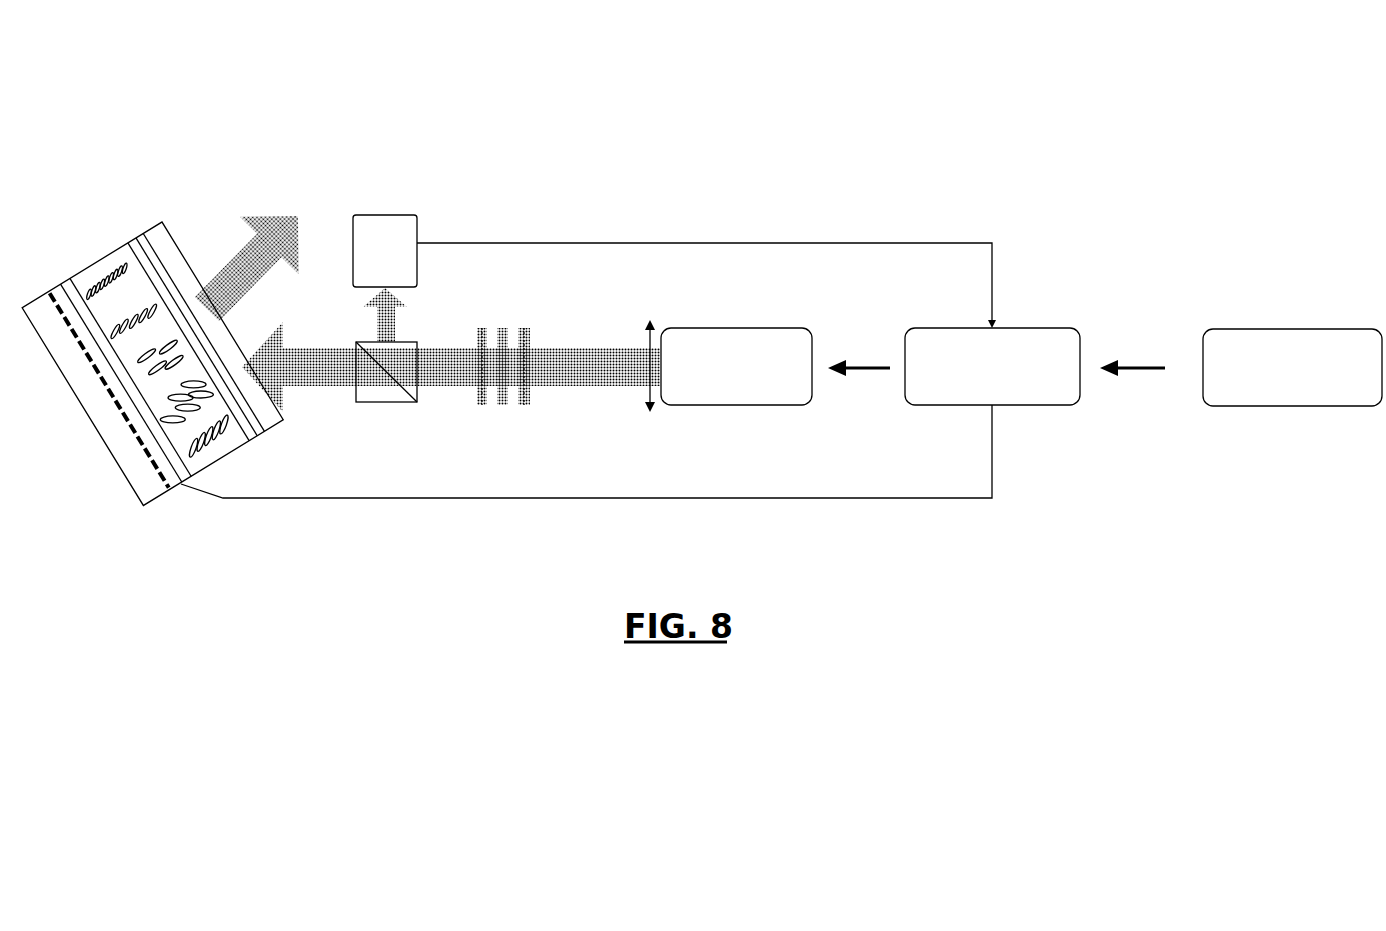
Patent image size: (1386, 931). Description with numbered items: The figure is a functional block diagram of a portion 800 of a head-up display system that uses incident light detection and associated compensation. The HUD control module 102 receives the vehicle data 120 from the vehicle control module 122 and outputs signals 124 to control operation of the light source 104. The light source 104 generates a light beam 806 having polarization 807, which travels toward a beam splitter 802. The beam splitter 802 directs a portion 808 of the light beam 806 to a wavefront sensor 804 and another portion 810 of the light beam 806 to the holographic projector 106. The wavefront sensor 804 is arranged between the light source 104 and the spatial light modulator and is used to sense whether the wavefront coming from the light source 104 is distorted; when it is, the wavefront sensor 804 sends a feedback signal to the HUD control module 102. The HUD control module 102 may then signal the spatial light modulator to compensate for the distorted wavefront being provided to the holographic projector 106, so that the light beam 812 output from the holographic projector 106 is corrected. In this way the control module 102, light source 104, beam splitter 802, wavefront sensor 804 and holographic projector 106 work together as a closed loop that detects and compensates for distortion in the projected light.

The portion of HUD system 800 is at (140, 77).
The holographic projector 106 is at (98, 261).
The light beam 812 is at (240, 248).
The portion of the light beam 810 is at (298, 383).
The light beam 806 is at (562, 385).
The polarization 807 is at (650, 333).
The portion of the light beam 808 is at (377, 327).
The beam splitter 802 is at (387, 402).
The wavefront sensor 804 is at (402, 215).
The light source 104 is at (753, 328).
The signals 124 is at (867, 362).
The HUD control module 102 is at (1038, 328).
The vehicle data 120 is at (1133, 367).
The vehicle control module 122 is at (1292, 329).